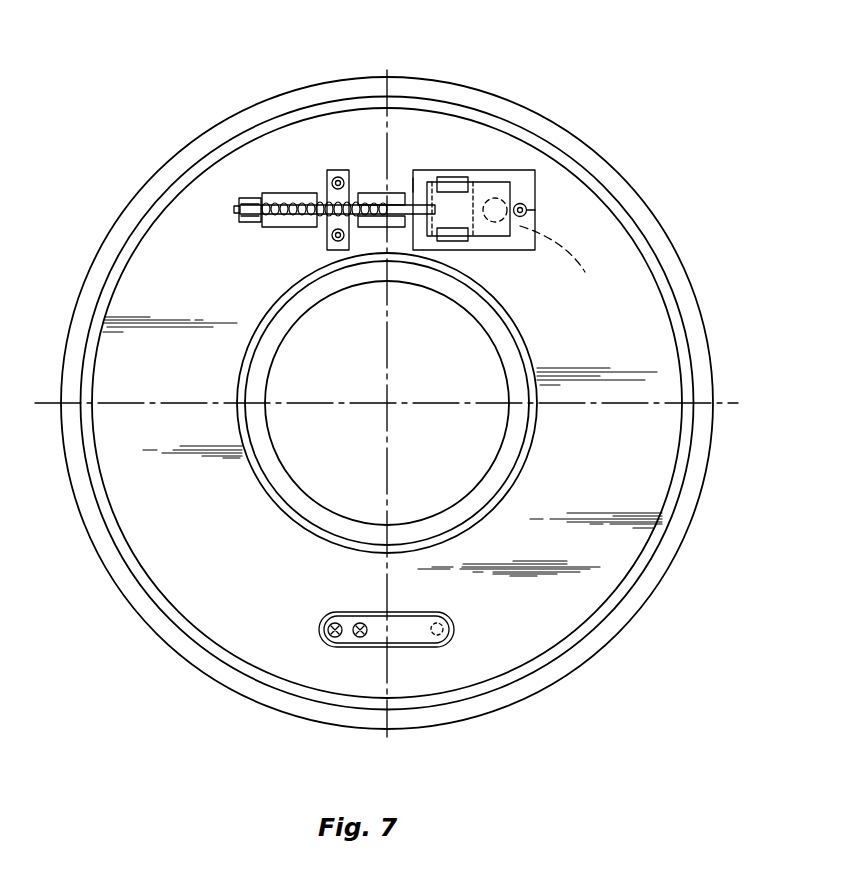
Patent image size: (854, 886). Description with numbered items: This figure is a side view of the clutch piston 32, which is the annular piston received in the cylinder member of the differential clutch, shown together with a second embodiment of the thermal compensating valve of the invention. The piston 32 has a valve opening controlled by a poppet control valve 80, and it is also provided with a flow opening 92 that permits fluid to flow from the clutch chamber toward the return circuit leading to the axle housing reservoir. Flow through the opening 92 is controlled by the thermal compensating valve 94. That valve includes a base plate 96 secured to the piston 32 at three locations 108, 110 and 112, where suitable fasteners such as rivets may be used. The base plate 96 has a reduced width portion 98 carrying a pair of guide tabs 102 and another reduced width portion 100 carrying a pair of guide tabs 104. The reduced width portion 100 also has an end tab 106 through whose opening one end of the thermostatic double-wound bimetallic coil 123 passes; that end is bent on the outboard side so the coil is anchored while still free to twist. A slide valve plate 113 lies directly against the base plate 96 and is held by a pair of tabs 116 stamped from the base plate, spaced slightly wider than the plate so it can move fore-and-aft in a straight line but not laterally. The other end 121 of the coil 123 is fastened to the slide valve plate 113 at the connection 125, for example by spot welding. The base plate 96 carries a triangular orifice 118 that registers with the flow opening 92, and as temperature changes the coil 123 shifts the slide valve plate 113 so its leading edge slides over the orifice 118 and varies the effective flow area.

The annular piston 32 is at (608, 469).
The poppet control valve 80 is at (423, 647).
The flow opening 92 is at (558, 268).
The thermal compensating valve 94 is at (430, 160).
The base plate 96 is at (443, 170).
The reduced width portion 98 is at (339, 174).
The reduced width portion 100 is at (253, 197).
The guide tabs 102 is at (405, 190).
The guide tabs 104 is at (273, 227).
The end tab 106 is at (237, 207).
The fastening location 108 is at (530, 211).
The fastening location 110 is at (332, 172).
The fastening location 112 is at (330, 240).
The slide valve plate 113 is at (480, 233).
The tabs 116 is at (452, 236).
The triangular orifice 118 is at (524, 204).
The end of bimetallic coil 121 is at (413, 180).
The double-wound bimetallic coil 123 is at (287, 203).
The connection point 125 is at (428, 215).